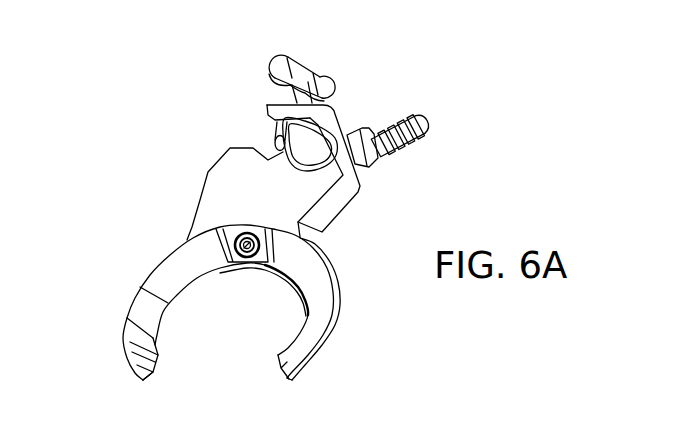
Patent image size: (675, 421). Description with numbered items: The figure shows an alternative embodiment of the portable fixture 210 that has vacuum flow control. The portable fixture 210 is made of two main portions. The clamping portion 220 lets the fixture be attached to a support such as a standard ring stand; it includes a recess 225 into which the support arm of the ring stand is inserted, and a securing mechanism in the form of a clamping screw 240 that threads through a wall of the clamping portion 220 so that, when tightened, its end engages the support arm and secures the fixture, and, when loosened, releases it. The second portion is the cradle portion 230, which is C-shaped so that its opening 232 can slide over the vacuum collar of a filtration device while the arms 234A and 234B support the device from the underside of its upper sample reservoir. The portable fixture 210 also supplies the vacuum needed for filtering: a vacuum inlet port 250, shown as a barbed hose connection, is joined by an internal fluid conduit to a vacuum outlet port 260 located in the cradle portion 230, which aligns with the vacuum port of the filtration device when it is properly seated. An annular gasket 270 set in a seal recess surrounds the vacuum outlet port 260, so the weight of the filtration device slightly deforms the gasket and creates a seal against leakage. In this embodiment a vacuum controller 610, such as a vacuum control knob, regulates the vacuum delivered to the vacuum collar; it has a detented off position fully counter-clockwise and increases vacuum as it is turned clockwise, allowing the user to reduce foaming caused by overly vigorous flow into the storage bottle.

The portable fixture 210 is at (74, 175).
The clamping portion 220 is at (228, 150).
The recess 225 is at (253, 136).
The cradle portion 230 is at (121, 315).
The opening 232 is at (218, 370).
The arm 234A is at (145, 264).
The arm 234B is at (320, 313).
The clamping screw 240 is at (281, 55).
The vacuum inlet port 250 is at (427, 118).
The vacuum outlet port 260 is at (247, 259).
The annular gasket 270 is at (245, 228).
The vacuum controller 610 is at (323, 168).